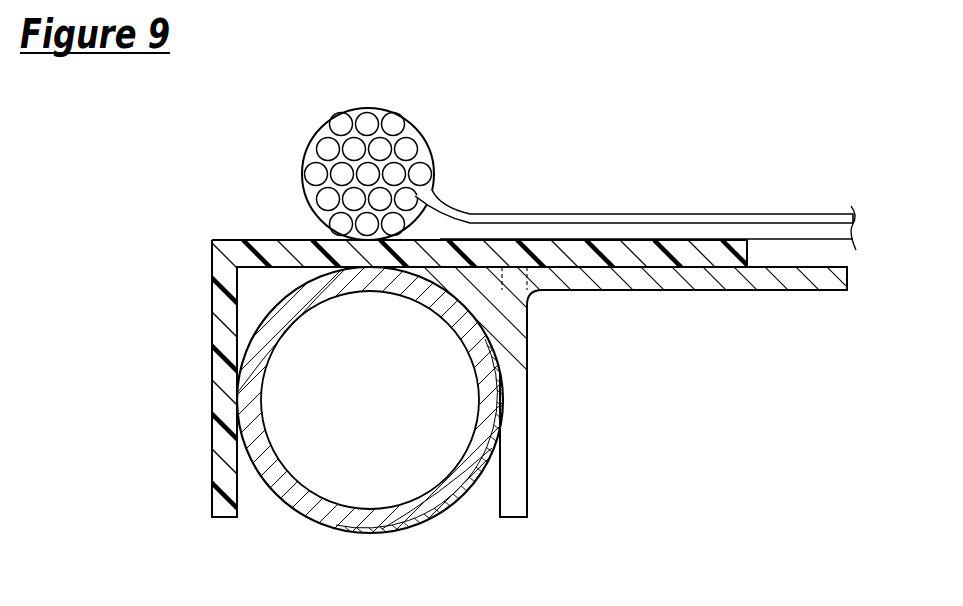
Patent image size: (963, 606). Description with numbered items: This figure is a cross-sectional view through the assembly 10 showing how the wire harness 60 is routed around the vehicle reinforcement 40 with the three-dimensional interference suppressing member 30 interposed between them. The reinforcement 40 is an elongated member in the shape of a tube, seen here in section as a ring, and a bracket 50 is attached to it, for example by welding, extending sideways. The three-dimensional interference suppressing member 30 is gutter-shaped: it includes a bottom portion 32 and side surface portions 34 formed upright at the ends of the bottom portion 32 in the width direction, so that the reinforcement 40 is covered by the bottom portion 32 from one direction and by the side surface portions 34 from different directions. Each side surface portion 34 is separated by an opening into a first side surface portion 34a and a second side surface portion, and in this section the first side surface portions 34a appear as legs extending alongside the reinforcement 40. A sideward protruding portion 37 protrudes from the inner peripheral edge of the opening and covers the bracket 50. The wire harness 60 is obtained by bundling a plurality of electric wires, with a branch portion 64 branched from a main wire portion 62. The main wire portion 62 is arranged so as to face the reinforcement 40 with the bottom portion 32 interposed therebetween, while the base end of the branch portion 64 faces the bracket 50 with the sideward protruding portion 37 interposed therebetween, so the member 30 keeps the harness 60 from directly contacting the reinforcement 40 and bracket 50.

The wire harness assembly 10 is at (481, 330).
The three-dimensional interference suppressing member 30 is at (481, 347).
The bottom portion 32 is at (267, 250).
The sideward protruding portion 37 is at (683, 250).
The side surface portion 34 is at (425, 391).
The first side surface portion 34a is at (220, 471).
The reinforcement 40 is at (340, 541).
The bracket 50 is at (720, 302).
The wire harness 60 is at (546, 156).
The main wire portion 62 is at (304, 158).
The branch portion 64 is at (600, 214).